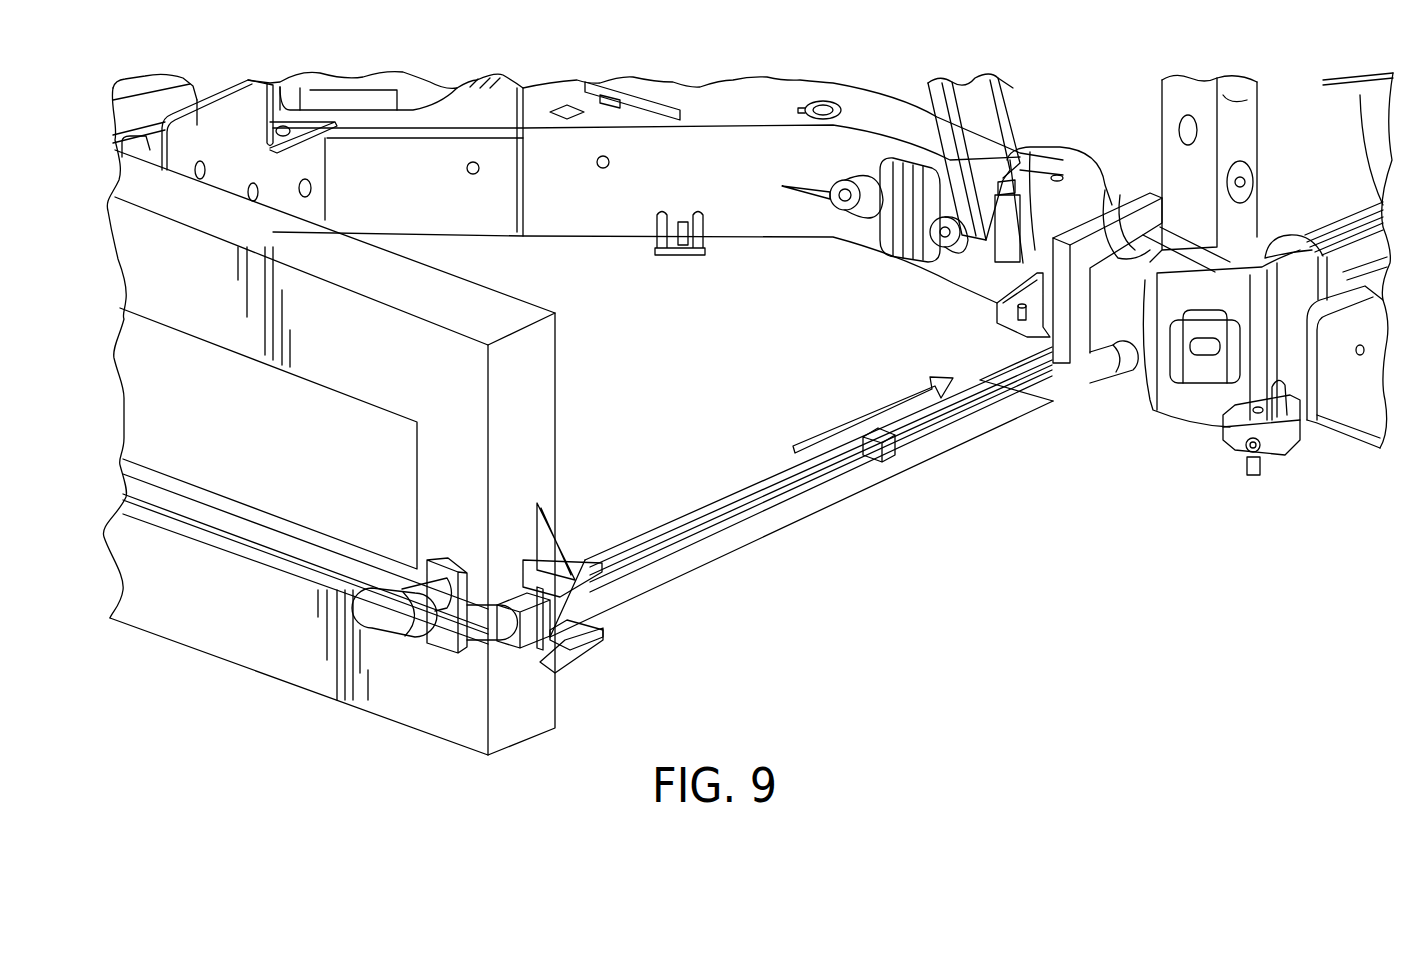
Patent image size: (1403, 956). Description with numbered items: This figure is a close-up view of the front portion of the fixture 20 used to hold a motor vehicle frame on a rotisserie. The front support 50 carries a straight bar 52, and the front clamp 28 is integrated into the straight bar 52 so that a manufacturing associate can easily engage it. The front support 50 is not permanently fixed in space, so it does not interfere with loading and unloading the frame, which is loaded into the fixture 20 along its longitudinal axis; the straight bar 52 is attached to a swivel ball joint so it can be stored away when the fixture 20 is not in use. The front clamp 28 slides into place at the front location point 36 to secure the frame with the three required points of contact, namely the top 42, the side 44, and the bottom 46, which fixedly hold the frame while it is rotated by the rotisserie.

The fixture 20 is at (243, 642).
The front clamp 28 is at (1075, 383).
The front location point 36 is at (1123, 312).
The top point of contact 42 is at (1120, 257).
The side point of contact 44 is at (1111, 347).
The bottom point of contact 46 is at (1097, 290).
The front support 50 is at (803, 503).
The straight bar 52 is at (935, 448).